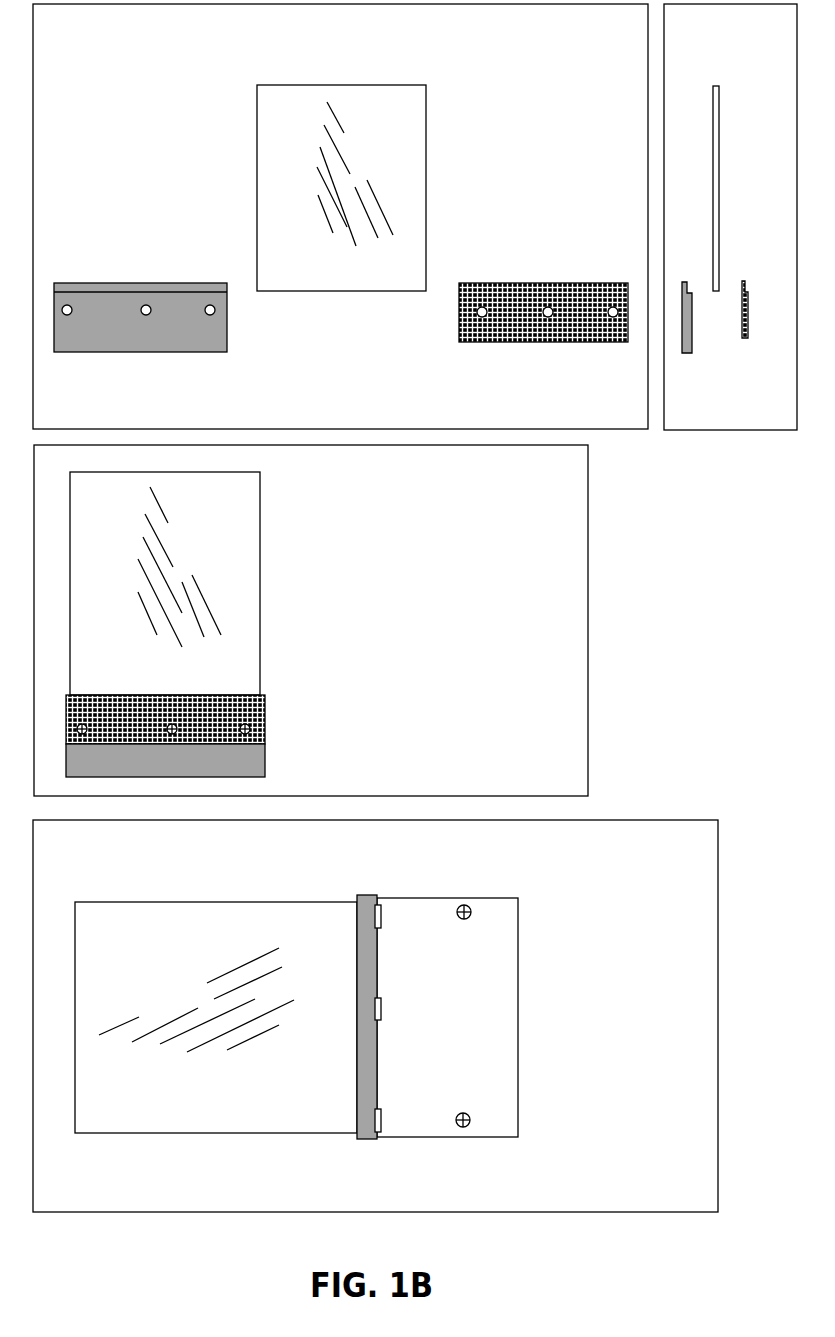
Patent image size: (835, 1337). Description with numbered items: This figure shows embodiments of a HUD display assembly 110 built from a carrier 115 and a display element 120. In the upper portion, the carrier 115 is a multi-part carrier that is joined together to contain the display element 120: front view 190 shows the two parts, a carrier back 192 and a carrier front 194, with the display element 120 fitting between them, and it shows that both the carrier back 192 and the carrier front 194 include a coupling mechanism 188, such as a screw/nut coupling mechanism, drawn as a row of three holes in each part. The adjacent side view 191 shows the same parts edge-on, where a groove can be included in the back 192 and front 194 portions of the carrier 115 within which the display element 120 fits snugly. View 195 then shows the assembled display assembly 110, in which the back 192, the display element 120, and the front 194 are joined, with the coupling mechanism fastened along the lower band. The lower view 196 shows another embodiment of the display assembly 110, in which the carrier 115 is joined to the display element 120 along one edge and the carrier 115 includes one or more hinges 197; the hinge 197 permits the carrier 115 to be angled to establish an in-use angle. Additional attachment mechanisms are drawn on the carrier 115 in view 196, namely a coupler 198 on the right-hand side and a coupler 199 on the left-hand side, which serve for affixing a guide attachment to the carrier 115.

The display assembly 110 is at (262, 660).
The carrier 115 is at (507, 1030).
The display element 120 is at (292, 292).
The coupling mechanism 188 is at (215, 313).
The front view 190 is at (340, 216).
The side view 191 is at (730, 217).
The carrier back 192 is at (104, 352).
The carrier front 194 is at (751, 350).
The assembled view 195 is at (311, 620).
The display assembly view 196 is at (375, 1016).
The hinge 197 is at (372, 1140).
The coupler for guide attachment (RHS) 198 is at (464, 905).
The coupler for guide attachment (LHS) 199 is at (463, 1127).